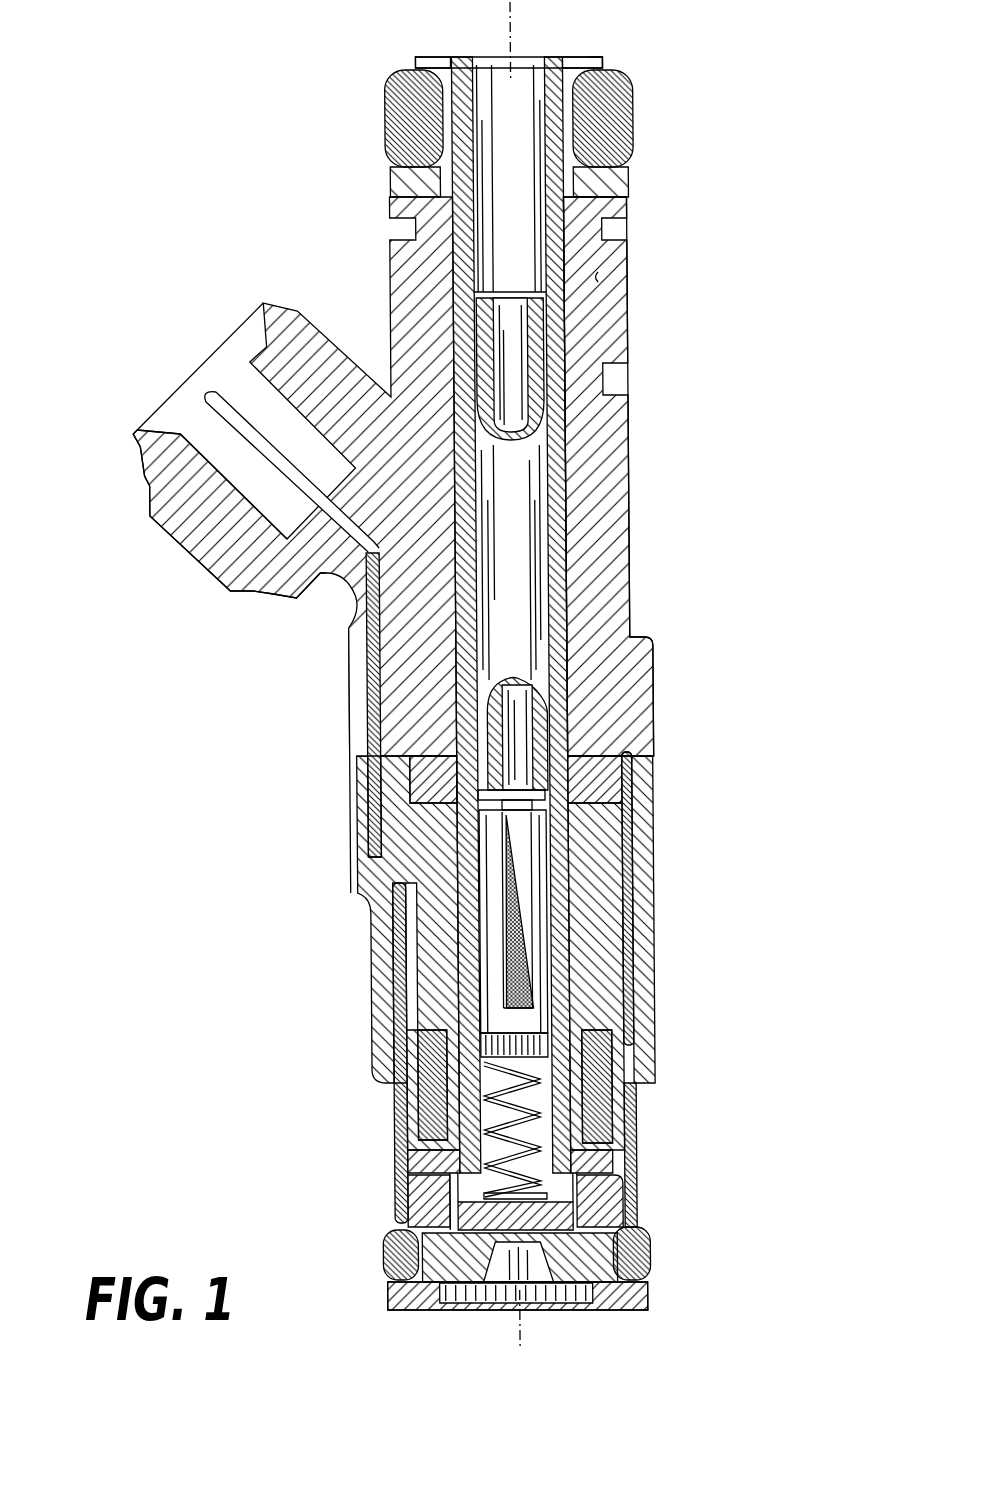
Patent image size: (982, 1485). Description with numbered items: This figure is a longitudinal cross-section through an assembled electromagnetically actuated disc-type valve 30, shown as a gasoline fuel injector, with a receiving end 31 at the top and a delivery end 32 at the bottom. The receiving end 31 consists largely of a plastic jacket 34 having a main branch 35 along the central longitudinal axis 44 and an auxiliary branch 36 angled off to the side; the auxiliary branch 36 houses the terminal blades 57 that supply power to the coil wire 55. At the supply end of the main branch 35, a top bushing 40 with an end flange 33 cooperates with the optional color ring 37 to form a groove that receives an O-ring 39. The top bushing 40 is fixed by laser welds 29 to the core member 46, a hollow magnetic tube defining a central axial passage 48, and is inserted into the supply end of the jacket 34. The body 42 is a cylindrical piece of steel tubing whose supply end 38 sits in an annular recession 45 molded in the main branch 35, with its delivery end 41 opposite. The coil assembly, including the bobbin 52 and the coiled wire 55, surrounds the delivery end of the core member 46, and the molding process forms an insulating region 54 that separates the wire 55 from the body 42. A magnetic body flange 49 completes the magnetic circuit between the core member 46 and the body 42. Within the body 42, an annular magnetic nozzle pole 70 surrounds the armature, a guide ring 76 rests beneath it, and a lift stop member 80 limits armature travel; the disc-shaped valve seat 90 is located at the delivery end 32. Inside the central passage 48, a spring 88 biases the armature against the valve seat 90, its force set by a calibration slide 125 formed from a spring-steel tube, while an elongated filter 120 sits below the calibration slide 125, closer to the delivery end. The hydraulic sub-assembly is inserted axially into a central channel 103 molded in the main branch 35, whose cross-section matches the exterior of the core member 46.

The welds 29 is at (453, 60).
The valve 30 is at (688, 226).
The receiving end 31 is at (623, 57).
The delivery end 32 is at (685, 1290).
The end flange 33 is at (633, 67).
The plastic jacket 34 is at (377, 417).
The main branch 35 is at (378, 660).
The auxiliary branch 36 is at (197, 540).
The color ring 37 is at (393, 187).
The supply end 38 is at (610, 775).
The O-ring 39 is at (625, 145).
The top bushing 40 is at (433, 64).
The delivery end 41 is at (632, 1218).
The body 42 is at (398, 905).
The central longitudinal axis 44 is at (512, 43).
The annular recession 45 is at (632, 815).
The core member 46 is at (467, 60).
The central axial passage 48 is at (500, 257).
The body flange 49 is at (630, 757).
The bobbin 52 is at (610, 852).
The insulating region 54 is at (402, 1015).
The wire 55 is at (412, 1085).
The terminal blades 57 is at (227, 397).
The magnetic nozzle pole 70 is at (420, 1200).
The guide ring 76 is at (410, 1216).
The lift stop member 80 is at (415, 1158).
The spring 88 is at (553, 1100).
The valve seat 90 is at (427, 1297).
The central channel 103 is at (597, 277).
The filter 120 is at (519, 953).
The calibration slide 125 is at (512, 518).